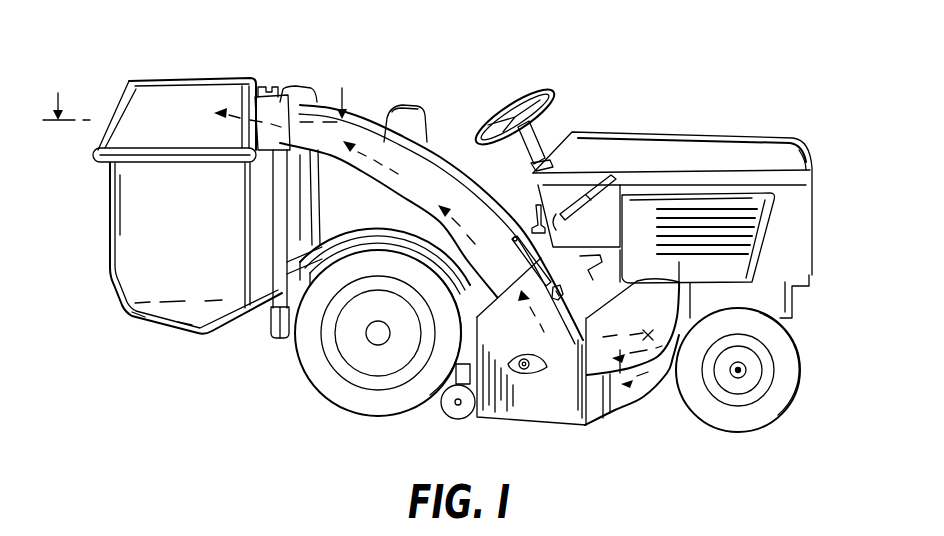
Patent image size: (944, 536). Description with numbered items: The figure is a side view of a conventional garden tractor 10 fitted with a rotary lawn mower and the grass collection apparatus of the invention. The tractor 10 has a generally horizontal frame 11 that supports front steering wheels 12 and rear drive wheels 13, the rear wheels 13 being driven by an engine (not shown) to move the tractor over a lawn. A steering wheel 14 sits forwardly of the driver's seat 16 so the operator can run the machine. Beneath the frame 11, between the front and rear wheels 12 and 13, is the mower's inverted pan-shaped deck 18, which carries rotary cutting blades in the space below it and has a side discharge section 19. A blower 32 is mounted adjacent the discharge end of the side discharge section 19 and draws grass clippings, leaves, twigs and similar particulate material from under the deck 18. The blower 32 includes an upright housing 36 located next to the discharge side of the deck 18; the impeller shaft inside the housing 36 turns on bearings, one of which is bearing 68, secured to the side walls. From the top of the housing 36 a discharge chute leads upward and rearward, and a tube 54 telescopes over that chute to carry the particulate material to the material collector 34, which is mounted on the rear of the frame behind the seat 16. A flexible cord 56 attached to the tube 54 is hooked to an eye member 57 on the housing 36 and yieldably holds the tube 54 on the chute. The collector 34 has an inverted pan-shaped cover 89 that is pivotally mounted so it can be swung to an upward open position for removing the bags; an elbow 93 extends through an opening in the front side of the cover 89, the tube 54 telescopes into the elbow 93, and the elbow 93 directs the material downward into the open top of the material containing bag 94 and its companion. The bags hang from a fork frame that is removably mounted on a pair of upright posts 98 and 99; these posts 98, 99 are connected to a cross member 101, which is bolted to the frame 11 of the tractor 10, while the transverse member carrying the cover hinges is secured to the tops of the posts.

The garden tractor 10 is at (694, 107).
The frame 11 is at (278, 354).
The front steering wheels 12 is at (793, 343).
The rear drive wheels 13 is at (342, 393).
The steering wheel 14 is at (528, 91).
The driver's seat 16 is at (406, 108).
The deck 18 is at (648, 337).
The side discharge section 19 is at (630, 388).
The blower 32 is at (526, 428).
The material collector 34 is at (174, 78).
The housing 36 is at (565, 408).
The tube 54 is at (365, 140).
The flexible cord 56 is at (524, 257).
The eye member 57 is at (560, 294).
The bearing 68 is at (531, 370).
The cover 89 is at (130, 132).
The elbow 93 is at (278, 113).
The material containing bag 94 is at (130, 273).
The upright post 98 is at (321, 187).
The upright post 99 is at (277, 237).
The cross member 101 is at (272, 322).